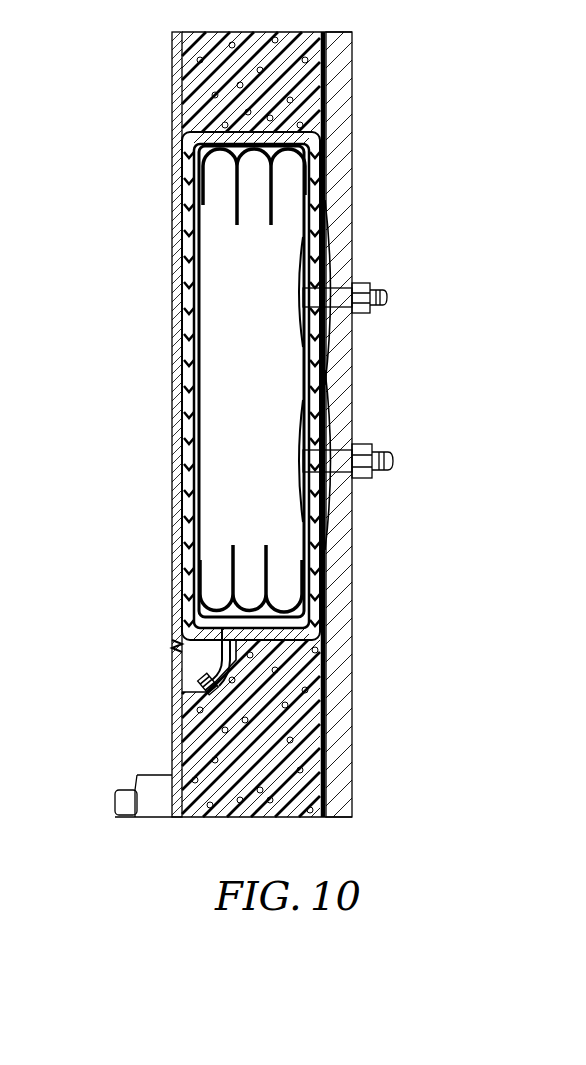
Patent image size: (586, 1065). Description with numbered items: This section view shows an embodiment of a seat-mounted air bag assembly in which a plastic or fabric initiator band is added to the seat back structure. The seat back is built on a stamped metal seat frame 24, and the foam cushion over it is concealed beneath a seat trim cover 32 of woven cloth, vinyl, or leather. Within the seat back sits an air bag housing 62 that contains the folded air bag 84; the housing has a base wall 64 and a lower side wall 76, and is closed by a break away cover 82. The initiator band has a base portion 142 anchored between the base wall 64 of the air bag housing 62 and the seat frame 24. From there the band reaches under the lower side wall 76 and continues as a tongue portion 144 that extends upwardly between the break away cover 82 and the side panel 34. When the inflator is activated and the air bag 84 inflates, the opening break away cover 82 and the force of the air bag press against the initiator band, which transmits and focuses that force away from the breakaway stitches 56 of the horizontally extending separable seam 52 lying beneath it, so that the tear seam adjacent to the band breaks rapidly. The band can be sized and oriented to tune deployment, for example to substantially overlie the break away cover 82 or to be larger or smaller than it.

The seat frame 24 is at (337, 93).
The seat trim cover 32 is at (178, 215).
The side panel 34 is at (178, 295).
The tongue portion 144 is at (176, 392).
The air bag 84 is at (265, 220).
The break away cover 82 is at (190, 310).
The air bag housing 62 is at (330, 360).
The base wall 64 is at (334, 406).
The lower side wall 76 is at (252, 612).
The base portion 142 is at (333, 530).
The breakaway stitches 56 is at (176, 687).
The horizontal extending separable seam 52 is at (176, 690).